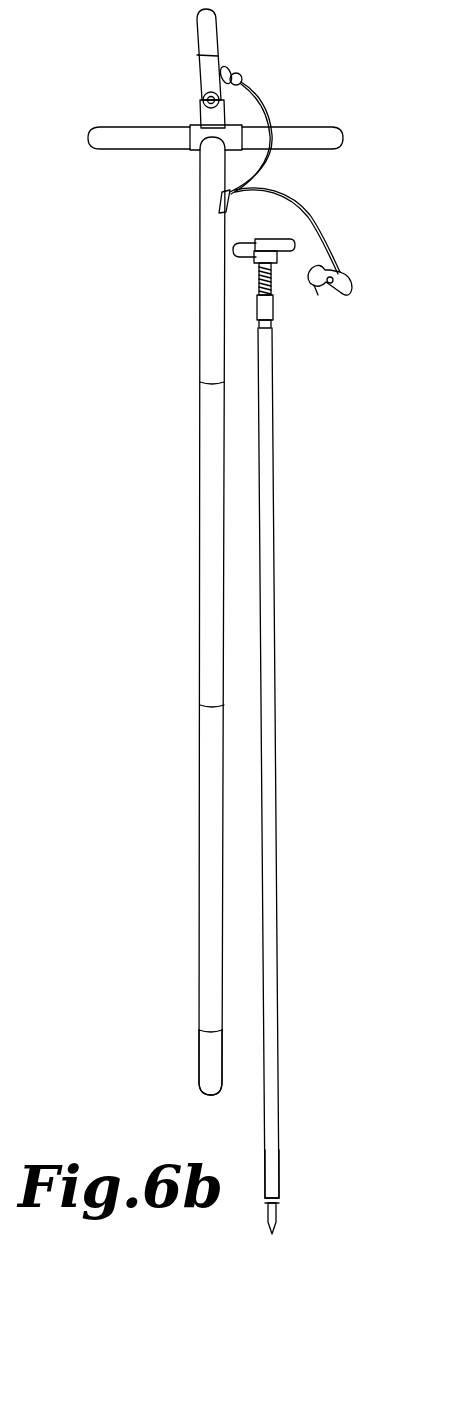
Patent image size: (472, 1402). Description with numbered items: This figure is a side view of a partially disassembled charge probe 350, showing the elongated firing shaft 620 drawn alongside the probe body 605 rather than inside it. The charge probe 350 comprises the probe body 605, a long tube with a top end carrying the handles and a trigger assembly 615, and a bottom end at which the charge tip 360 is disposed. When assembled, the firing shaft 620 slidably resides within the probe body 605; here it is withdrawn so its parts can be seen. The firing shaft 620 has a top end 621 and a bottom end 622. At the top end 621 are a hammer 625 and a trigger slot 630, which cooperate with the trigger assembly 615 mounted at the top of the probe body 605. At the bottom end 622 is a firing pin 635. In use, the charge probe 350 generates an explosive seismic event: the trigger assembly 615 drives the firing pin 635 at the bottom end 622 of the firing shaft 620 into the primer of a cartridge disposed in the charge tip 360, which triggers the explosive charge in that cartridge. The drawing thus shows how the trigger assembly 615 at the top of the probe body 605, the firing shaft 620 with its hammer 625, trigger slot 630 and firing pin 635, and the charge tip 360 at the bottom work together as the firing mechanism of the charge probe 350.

The charge probe 350 is at (144, 401).
The charge tip 360 is at (198, 1060).
The probe body 605 is at (200, 562).
The trigger assembly 615 is at (259, 48).
The firing shaft 620 is at (273, 532).
The top end of firing shaft 621 is at (272, 270).
The bottom end of firing shaft 622 is at (282, 1175).
The hammer 625 is at (293, 242).
The trigger slot 630 is at (272, 323).
The firing pin 635 is at (267, 1222).